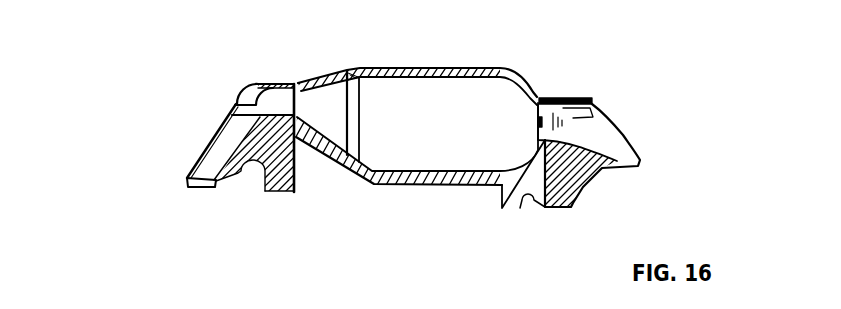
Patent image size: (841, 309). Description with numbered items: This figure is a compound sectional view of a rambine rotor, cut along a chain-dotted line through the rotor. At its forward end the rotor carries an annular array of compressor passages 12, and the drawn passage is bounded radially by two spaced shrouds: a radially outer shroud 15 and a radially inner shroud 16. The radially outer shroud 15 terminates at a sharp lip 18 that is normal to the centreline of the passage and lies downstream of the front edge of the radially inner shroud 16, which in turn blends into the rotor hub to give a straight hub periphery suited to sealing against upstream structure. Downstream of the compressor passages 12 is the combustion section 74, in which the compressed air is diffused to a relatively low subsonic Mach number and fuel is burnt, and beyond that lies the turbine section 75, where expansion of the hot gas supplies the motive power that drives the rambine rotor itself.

The radially outer shroud 15 is at (250, 84).
The sharp lip 18 is at (254, 93).
The compressor passage 12 is at (226, 127).
The radially inner shroud 16 is at (231, 168).
The combustion section 74 is at (453, 125).
The turbine section 75 is at (568, 132).